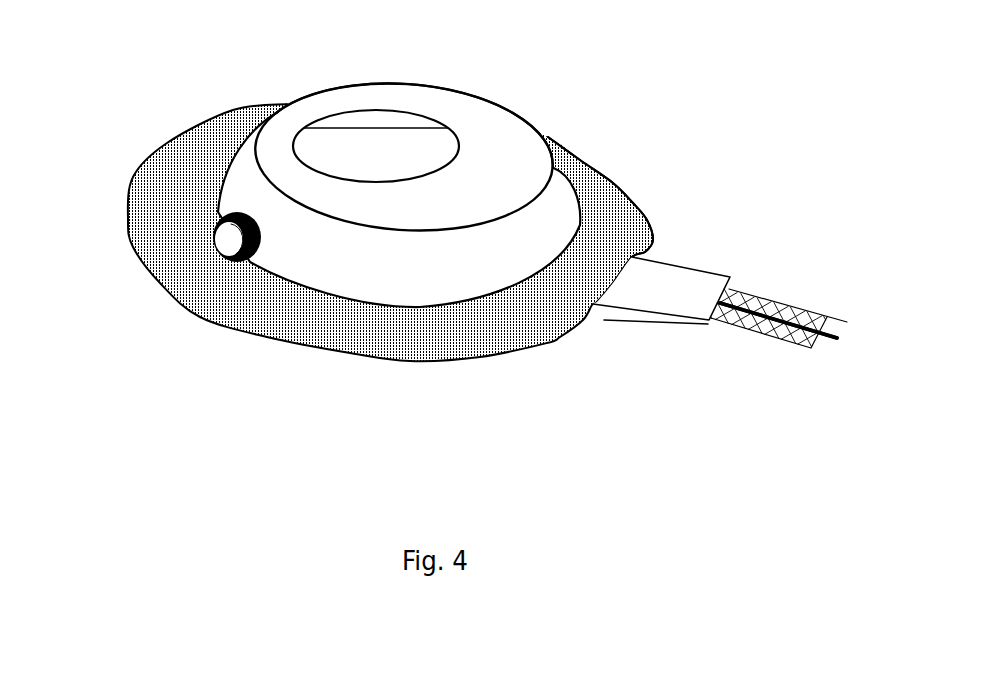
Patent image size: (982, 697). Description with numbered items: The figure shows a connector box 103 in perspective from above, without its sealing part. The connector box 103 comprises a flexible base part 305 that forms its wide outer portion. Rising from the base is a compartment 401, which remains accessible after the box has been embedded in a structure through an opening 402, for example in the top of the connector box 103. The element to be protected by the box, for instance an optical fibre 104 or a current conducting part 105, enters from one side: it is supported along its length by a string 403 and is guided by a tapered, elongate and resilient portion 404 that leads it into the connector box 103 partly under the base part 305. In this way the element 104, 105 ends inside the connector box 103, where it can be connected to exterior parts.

The connector box 103 is at (193, 107).
The flexible base part 305 is at (597, 193).
The compartment 401 is at (355, 142).
The opening 402 is at (390, 147).
The string 403 is at (742, 298).
The tapered, elongate and resilient portion 404 is at (650, 297).
The optical fibre 104 is at (789, 333).
The current conducting part 105 is at (778, 320).